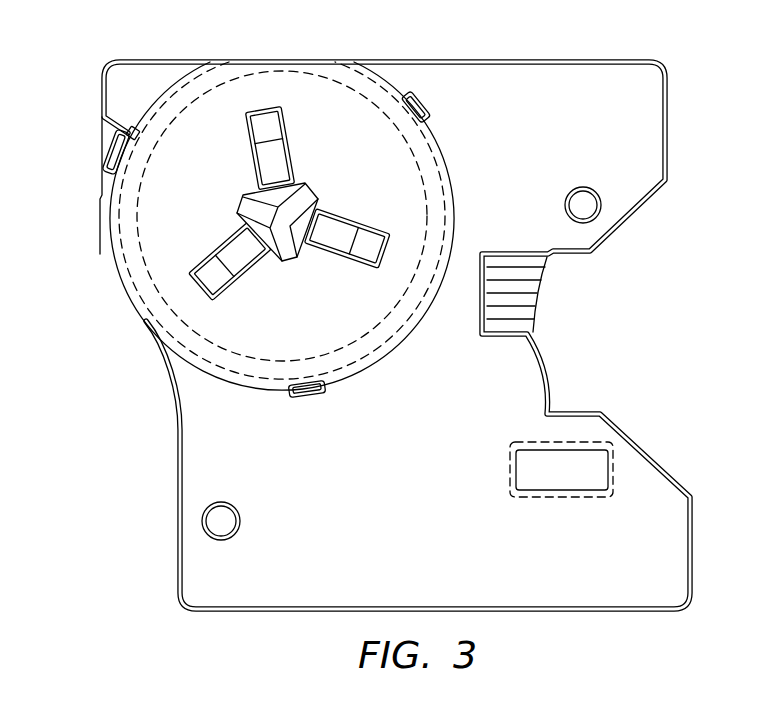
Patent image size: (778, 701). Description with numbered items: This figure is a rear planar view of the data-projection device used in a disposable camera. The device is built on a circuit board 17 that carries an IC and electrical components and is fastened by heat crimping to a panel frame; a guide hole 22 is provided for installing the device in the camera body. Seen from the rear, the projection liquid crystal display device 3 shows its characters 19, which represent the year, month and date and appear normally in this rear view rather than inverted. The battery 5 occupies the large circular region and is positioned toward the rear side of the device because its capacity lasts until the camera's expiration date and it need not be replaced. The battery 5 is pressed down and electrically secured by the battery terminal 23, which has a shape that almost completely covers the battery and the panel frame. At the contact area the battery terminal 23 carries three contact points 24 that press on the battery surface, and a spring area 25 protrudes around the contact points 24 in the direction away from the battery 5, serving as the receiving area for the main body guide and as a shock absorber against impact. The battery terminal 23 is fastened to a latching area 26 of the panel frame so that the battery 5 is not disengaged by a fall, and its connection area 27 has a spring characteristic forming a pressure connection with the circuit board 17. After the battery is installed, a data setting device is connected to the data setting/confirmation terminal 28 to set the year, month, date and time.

The projection liquid crystal display device 3 is at (610, 462).
The battery 5 is at (341, 84).
The circuit board 17 is at (669, 136).
The characters 19 is at (590, 460).
The guide hole 22 is at (585, 210).
The battery terminal 23 is at (428, 90).
The contact point 24 is at (250, 198).
The spring area 25 is at (263, 120).
The latching area 26 is at (433, 113).
The connection area 27 is at (108, 155).
The data setting/confirmation terminal 28 is at (533, 266).